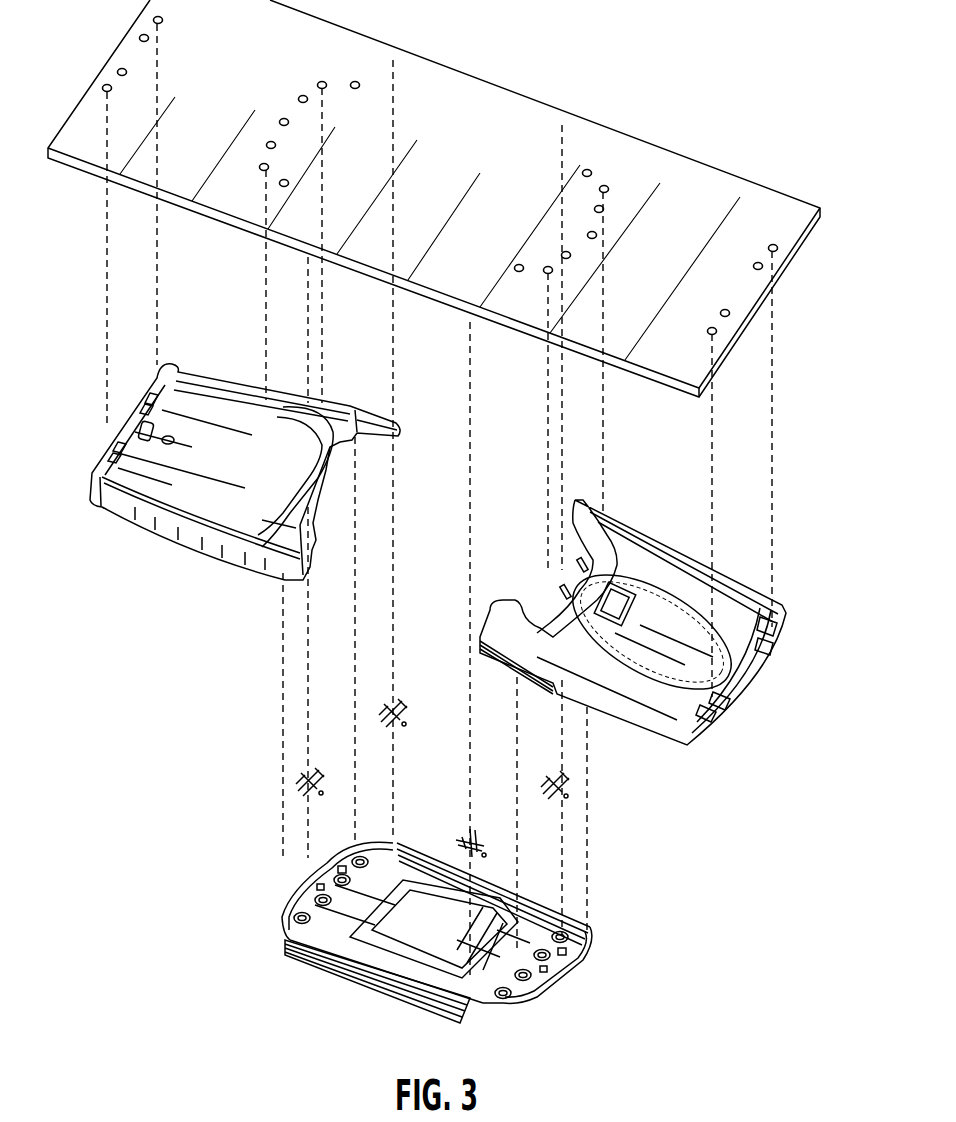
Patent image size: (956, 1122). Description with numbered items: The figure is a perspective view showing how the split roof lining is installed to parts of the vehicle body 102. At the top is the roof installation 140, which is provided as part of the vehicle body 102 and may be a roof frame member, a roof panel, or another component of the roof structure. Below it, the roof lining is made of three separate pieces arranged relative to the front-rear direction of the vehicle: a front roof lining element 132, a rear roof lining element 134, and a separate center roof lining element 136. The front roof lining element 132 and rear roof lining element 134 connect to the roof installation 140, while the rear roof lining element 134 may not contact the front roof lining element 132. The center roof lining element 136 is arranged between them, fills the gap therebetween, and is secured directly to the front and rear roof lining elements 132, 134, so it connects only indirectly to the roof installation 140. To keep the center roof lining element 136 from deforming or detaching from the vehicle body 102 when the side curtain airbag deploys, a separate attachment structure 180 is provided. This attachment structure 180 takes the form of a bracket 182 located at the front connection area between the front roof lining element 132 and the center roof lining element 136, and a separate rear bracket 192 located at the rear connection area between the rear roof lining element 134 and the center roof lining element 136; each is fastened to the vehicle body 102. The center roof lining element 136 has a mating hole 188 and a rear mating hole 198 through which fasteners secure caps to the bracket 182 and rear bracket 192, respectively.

The vehicle body 102 is at (673, 173).
The roof installation 140 is at (484, 92).
The rear roof lining element 134 is at (148, 523).
The front roof lining element 132 is at (670, 725).
The center roof lining element 136 is at (402, 944).
The attachment structure 180 is at (237, 770).
The bracket 182 is at (567, 790).
The rear bracket 192 is at (385, 713).
The mating hole 188 is at (485, 1003).
The rear mating hole 198 is at (310, 918).